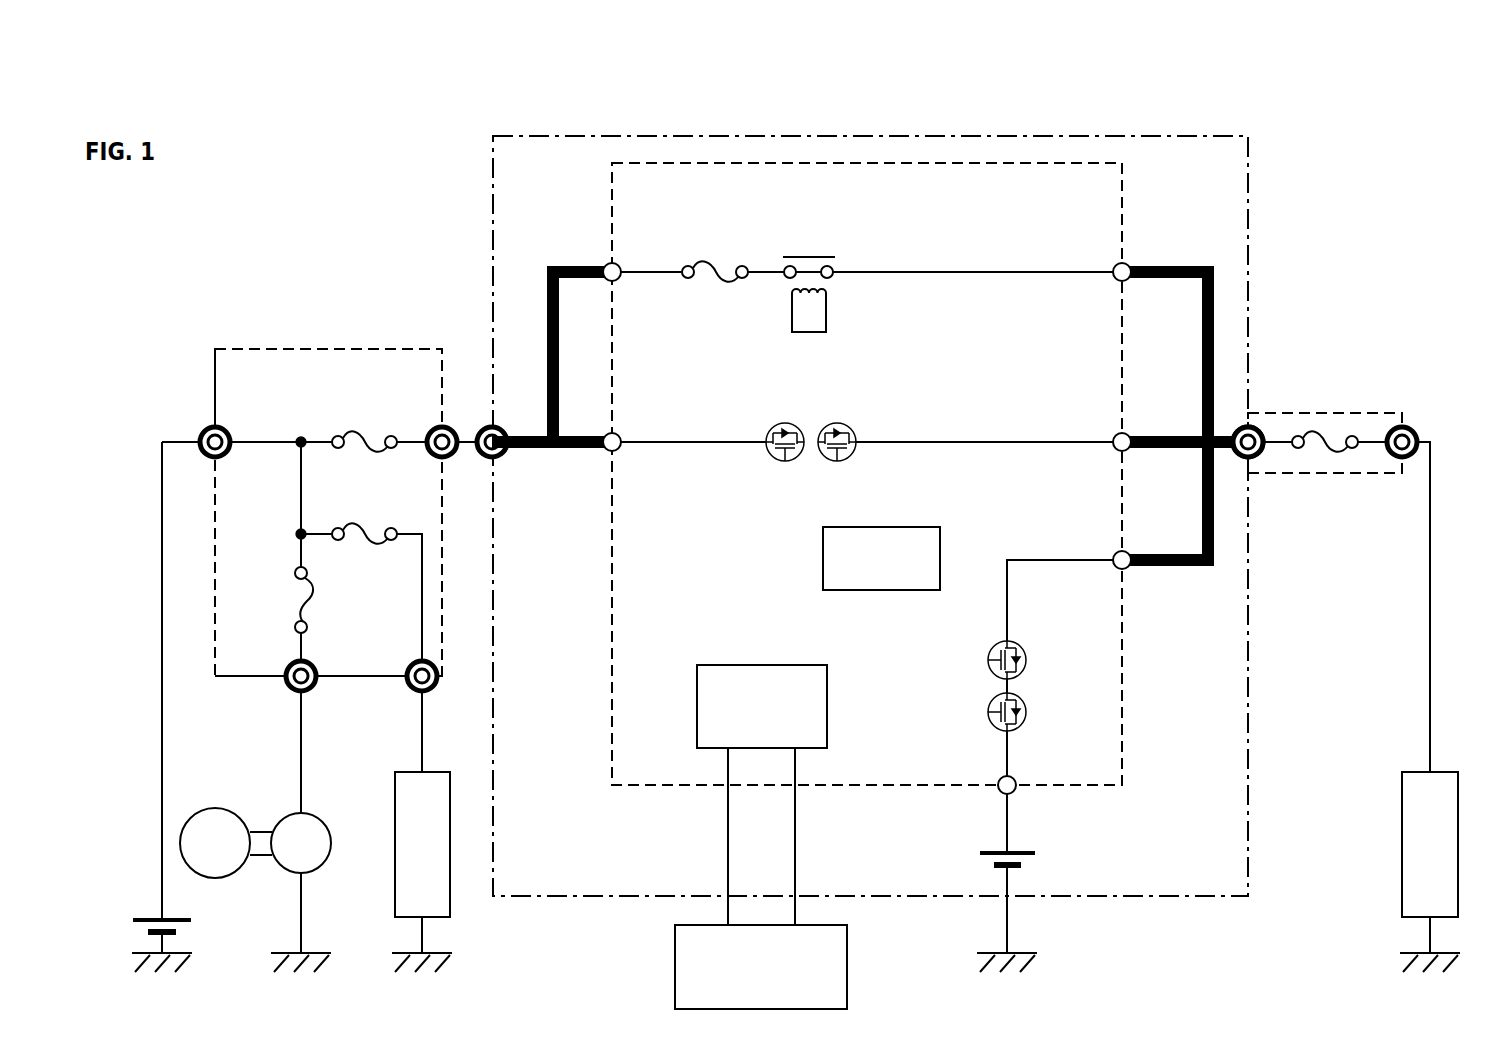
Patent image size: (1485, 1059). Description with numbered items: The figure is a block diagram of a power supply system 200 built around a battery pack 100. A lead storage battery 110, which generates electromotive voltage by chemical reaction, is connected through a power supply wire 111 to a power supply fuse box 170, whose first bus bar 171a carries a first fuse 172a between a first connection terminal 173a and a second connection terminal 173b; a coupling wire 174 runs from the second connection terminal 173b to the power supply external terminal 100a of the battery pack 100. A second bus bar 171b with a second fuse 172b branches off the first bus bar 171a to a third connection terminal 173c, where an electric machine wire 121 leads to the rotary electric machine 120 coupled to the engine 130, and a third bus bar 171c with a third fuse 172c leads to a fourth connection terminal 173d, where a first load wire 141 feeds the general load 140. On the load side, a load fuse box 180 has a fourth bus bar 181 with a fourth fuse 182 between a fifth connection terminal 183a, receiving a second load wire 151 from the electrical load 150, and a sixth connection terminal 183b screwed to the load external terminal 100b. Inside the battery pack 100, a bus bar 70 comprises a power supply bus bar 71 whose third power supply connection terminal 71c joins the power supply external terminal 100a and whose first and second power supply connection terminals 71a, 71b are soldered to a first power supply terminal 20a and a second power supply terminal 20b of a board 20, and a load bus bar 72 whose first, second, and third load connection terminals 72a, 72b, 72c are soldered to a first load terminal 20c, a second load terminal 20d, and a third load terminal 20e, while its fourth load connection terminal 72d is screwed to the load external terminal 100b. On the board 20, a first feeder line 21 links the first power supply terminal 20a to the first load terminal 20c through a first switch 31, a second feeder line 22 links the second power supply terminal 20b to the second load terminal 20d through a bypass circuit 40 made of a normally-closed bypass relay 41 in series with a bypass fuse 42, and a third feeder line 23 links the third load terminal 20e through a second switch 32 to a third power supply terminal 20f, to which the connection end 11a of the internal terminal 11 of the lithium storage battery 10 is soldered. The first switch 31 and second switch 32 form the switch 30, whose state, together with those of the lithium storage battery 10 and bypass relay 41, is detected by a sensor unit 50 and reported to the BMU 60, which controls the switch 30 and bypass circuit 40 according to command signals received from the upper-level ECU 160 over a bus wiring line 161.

The power supply system 200 is at (1298, 143).
The battery pack 100 is at (1252, 284).
The board 20 is at (1126, 210).
The first power supply terminal 20a is at (622, 436).
The second power supply terminal 20b is at (622, 268).
The first load terminal 20c is at (1115, 436).
The second load terminal 20d is at (1115, 266).
The third load terminal 20e is at (1115, 556).
The third power supply terminal 20f is at (1018, 782).
The first feeder line 21 is at (972, 434).
The second feeder line 22 is at (981, 270).
The third feeder line 23 is at (1005, 604).
The switch 30 is at (867, 556).
The first switch 31 is at (838, 424).
The second switch 32 is at (1028, 660).
The bypass circuit 40 is at (867, 264).
The bypass relay 41 is at (809, 258).
The bypass fuse 42 is at (736, 268).
The sensor unit 50 is at (843, 526).
The BMU 60 is at (715, 664).
The bus bar 70 is at (894, 374).
The power supply bus bar 71 is at (552, 330).
The first power supply connection terminal 71a is at (583, 434).
The second power supply connection terminal 71b is at (574, 265).
The third power supply connection terminal 71c is at (523, 434).
The load bus bar 72 is at (1209, 392).
The first load connection terminal 72a is at (1152, 434).
The second load connection terminal 72b is at (1150, 266).
The third load connection terminal 72c is at (1158, 554).
The fourth load connection terminal 72d is at (1225, 432).
The power supply external terminal 100a is at (500, 458).
The load external terminal 100b is at (1264, 432).
The lithium storage battery 10 is at (1037, 852).
The internal terminal 11 is at (1013, 820).
The connection end 11a is at (1000, 806).
The lead storage battery 110 is at (140, 915).
The power supply wire 111 is at (160, 566).
The rotary electric machine 120 is at (312, 812).
The electric machine wire 121 is at (300, 738).
The engine 130 is at (216, 808).
The general load 140 is at (392, 853).
The first load wire 141 is at (420, 740).
The electrical load 150 is at (1418, 770).
The second load wire 151 is at (1428, 670).
The upper-level ECU 160 is at (848, 962).
The bus wiring line 161 is at (796, 855).
The power supply fuse box 170 is at (310, 348).
The first bus bar 171a is at (266, 440).
The second bus bar 171b is at (298, 512).
The third bus bar 171c is at (420, 600).
The first fuse 172a is at (350, 428).
The second fuse 172b is at (292, 612).
The third fuse 172c is at (352, 526).
The first connection terminal 173a is at (201, 433).
The second connection terminal 173b is at (428, 432).
The third connection terminal 173c is at (290, 670).
The fourth connection terminal 173d is at (412, 668).
The coupling wire 174 is at (470, 432).
The load fuse box 180 is at (1385, 412).
The fourth bus bar 181 is at (1375, 446).
The fourth fuse 182 is at (1325, 432).
The fifth connection terminal 183a is at (1395, 462).
The sixth connection terminal 183b is at (1256, 462).